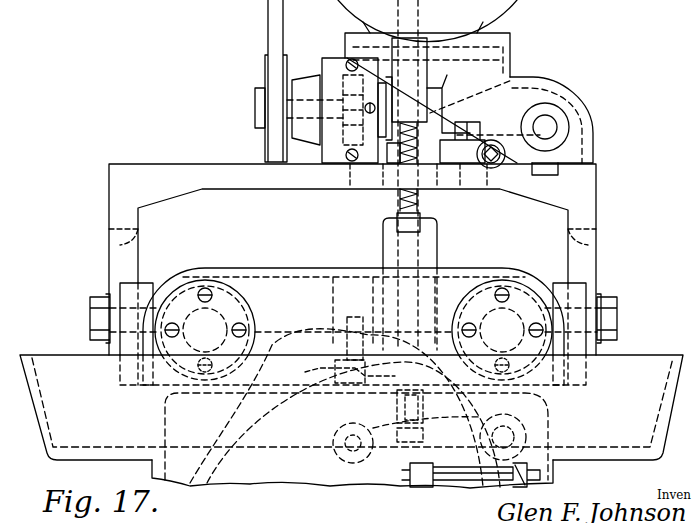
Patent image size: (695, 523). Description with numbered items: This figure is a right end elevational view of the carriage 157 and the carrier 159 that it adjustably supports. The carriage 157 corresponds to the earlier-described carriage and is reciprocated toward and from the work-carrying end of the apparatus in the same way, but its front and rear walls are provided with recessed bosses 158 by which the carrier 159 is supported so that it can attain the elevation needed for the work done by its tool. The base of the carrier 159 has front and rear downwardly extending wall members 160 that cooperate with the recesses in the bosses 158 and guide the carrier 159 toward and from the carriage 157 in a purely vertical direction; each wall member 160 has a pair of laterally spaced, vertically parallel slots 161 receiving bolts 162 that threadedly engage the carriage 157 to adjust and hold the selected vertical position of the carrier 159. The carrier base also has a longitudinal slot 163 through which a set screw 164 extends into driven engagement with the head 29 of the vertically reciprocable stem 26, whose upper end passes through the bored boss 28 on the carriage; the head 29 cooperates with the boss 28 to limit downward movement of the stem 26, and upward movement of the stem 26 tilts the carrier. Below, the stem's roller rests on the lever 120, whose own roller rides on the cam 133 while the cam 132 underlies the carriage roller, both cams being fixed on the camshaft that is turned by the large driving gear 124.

The stem 26 is at (425, 248).
The bored boss 28 is at (383, 244).
The head 29 is at (412, 223).
The lever 120 is at (386, 481).
The driving gear 124 is at (308, 374).
The cam 132 is at (215, 428).
The cam 133 is at (330, 481).
The carriage 157 is at (259, 264).
The recessed bosses 158 is at (153, 283).
The carrier 159 is at (565, 88).
The wall members 160 is at (109, 205).
The slots 161 is at (115, 240).
The bolts 162 is at (88, 318).
The longitudinal slot 163 is at (395, 191).
The set screw 164 is at (400, 205).